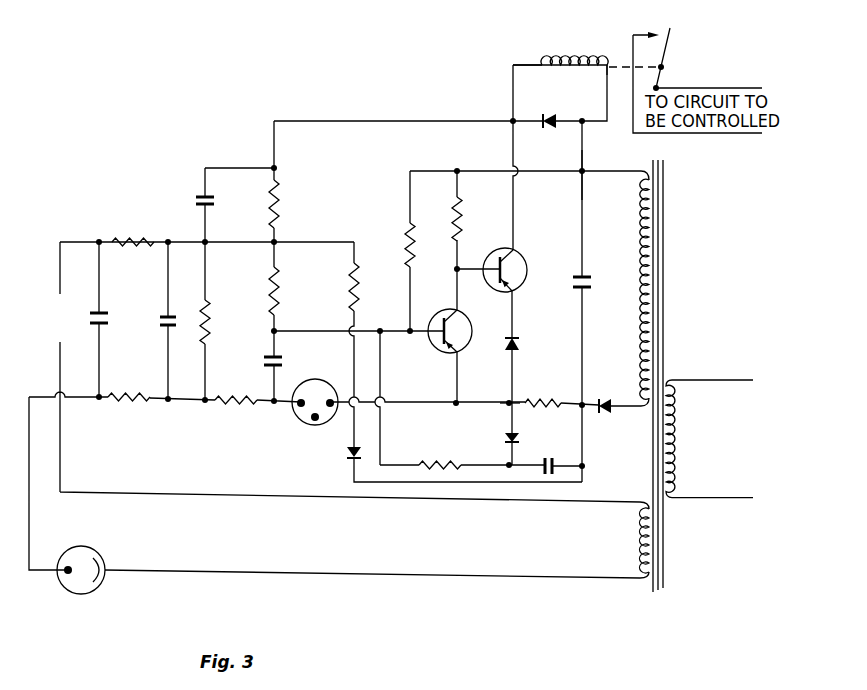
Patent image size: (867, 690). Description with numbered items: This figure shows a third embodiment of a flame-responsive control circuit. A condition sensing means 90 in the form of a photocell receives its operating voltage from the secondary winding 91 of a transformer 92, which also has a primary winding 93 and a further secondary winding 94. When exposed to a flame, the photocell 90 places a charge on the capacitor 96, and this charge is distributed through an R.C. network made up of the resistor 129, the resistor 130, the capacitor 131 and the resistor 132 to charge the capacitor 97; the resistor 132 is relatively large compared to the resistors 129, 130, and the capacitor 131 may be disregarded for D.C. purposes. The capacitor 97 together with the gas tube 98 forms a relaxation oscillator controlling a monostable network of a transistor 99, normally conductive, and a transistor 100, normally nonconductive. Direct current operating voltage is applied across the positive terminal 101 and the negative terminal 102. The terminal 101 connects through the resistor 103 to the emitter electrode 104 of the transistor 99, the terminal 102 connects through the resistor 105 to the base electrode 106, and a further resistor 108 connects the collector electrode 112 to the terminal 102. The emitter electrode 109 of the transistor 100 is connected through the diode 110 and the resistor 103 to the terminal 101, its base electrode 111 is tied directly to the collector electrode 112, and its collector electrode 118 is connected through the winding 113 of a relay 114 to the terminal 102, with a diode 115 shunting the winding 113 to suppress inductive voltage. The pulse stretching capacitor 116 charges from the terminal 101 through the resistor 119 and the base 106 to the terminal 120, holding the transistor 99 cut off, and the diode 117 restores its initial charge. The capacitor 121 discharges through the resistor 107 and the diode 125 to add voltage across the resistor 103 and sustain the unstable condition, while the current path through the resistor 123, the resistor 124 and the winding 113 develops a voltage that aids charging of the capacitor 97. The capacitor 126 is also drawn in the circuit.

The condition sensing means 90 is at (100, 556).
The secondary winding 91 is at (638, 536).
The transformer 92 is at (673, 268).
The primary winding 93 is at (678, 442).
The further secondary winding 94 is at (640, 216).
The capacitor 96 is at (106, 313).
The capacitor 97 is at (283, 358).
The gas tube 98 is at (298, 420).
The transistor 99 is at (462, 312).
The transistor 100 is at (526, 266).
The positive terminal 101 is at (596, 409).
The negative terminal 102 is at (584, 172).
The resistor 103 is at (545, 400).
The emitter electrode 104 is at (458, 353).
The resistor 105 is at (414, 248).
The base electrode 106 is at (441, 320).
The resistor 107 is at (358, 290).
The further resistor 108 is at (466, 214).
The emitter electrode 109 is at (518, 290).
The diode 110 is at (516, 339).
The base electrode 111 is at (496, 265).
The collector electrode 112 is at (469, 318).
The winding 113 is at (590, 70).
The relay 114 is at (566, 50).
The diode 115 is at (553, 126).
The pulse stretching capacitor 116 is at (554, 458).
The diode 117 is at (516, 436).
The collector electrode 118 is at (511, 254).
The resistor 119 is at (441, 462).
The terminal 120 is at (508, 405).
The capacitor 121 is at (203, 193).
The resistor 123 is at (279, 300).
The resistor 124 is at (279, 200).
The diode 125 is at (350, 460).
The capacitor 126 is at (584, 272).
The resistor 129 is at (135, 238).
The resistor 130 is at (142, 402).
The capacitor 131 is at (165, 327).
The resistor 132 is at (210, 320).